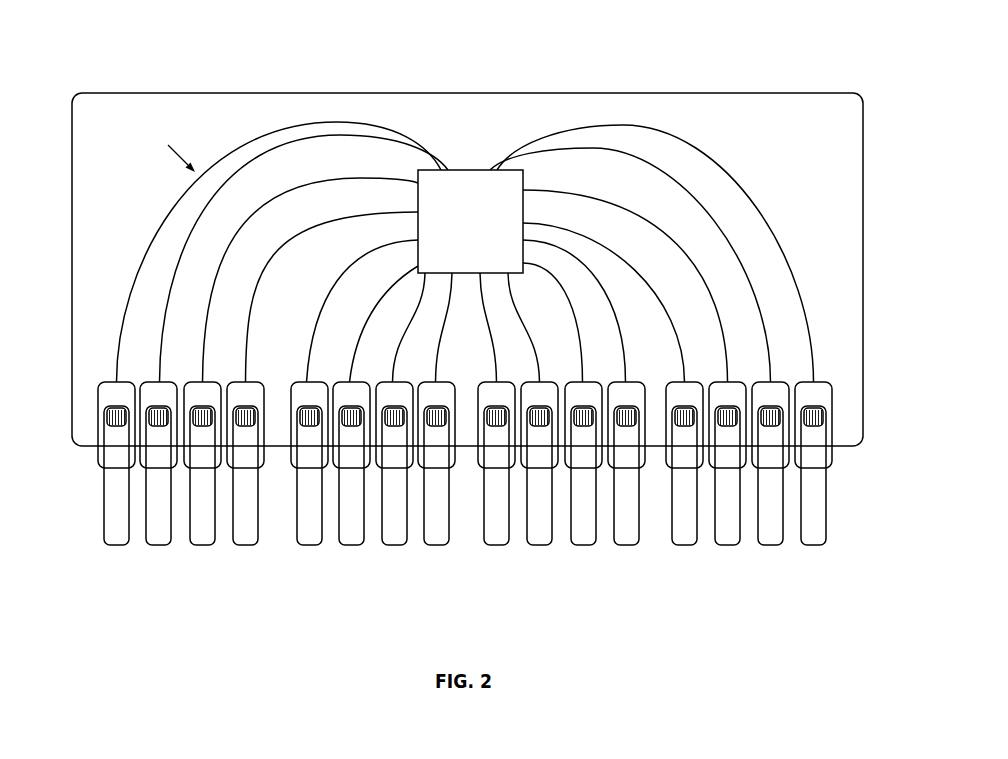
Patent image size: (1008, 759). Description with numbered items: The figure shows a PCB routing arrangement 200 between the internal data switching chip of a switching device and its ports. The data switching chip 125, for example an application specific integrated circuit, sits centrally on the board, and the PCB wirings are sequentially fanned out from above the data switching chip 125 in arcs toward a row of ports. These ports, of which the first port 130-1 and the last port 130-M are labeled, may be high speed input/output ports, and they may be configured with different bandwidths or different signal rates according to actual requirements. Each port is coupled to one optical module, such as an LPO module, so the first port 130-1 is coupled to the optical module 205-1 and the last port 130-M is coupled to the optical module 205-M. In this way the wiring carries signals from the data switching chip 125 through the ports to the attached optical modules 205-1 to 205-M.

The PCB routing arrangement 200 is at (184, 49).
The data switching chip 125 is at (487, 264).
The port 130-1 is at (98, 383).
The port 130-M is at (832, 382).
The optical module 205-1 is at (115, 545).
The optical module 205-M is at (814, 545).